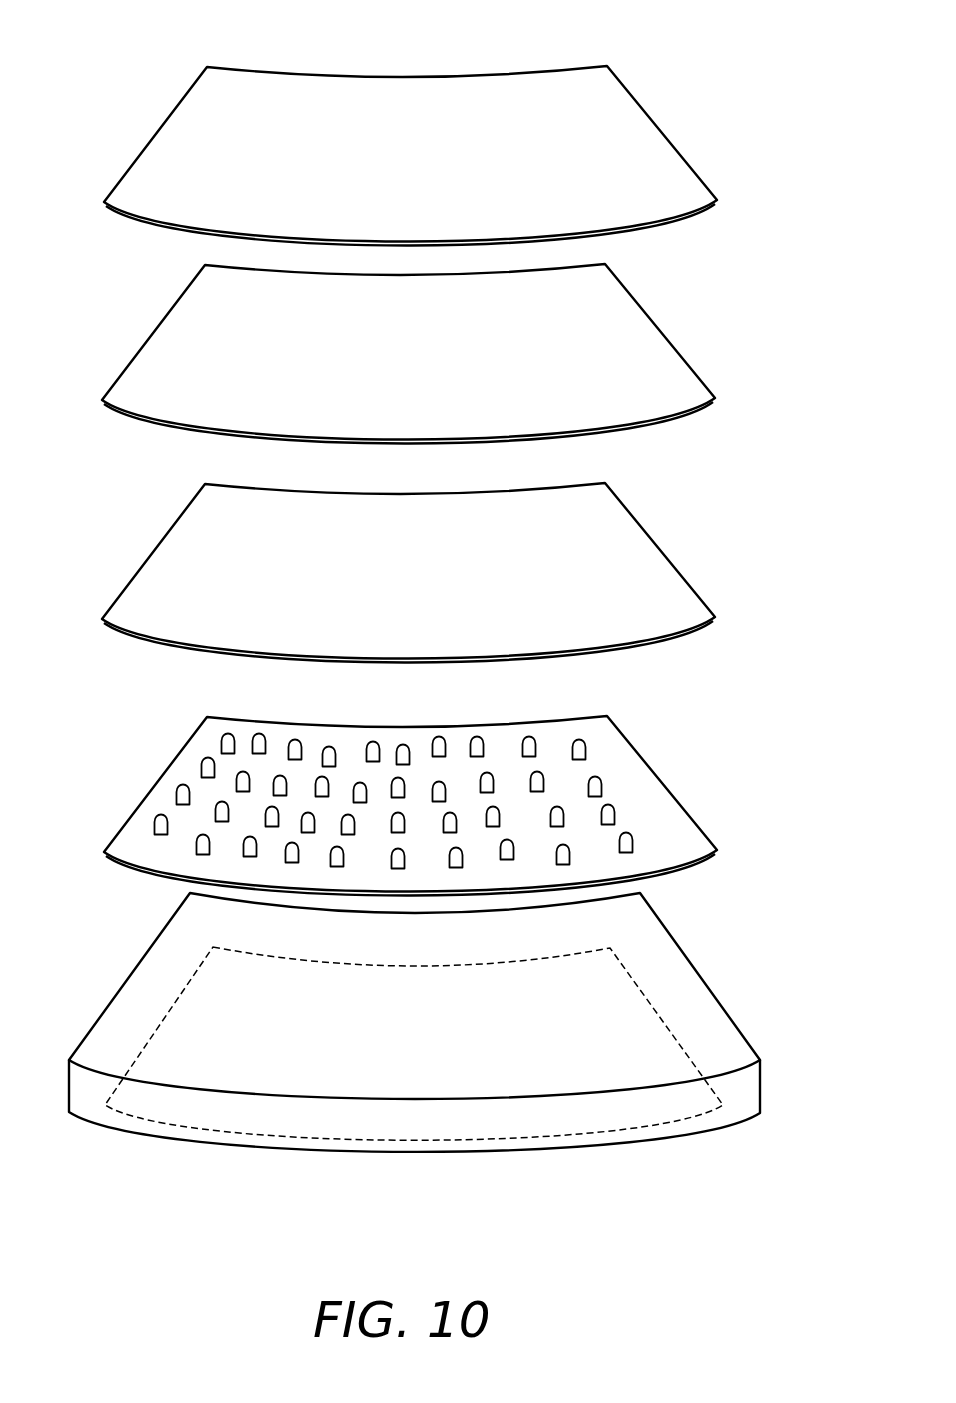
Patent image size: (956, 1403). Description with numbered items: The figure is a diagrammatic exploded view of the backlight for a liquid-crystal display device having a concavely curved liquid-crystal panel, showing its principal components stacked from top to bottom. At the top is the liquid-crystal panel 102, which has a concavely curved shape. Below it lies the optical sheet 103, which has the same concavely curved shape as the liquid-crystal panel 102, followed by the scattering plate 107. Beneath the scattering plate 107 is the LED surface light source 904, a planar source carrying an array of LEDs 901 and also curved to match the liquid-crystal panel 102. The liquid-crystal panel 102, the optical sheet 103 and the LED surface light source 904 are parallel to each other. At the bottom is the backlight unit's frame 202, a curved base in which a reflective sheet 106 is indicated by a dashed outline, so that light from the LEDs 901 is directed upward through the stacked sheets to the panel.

The liquid-crystal panel 102 is at (425, 93).
The optical sheet 103 is at (668, 372).
The scattering plate 107 is at (670, 568).
The LED surface light source 904 is at (672, 802).
The LEDs 901 is at (583, 753).
The backlight unit's frame 202 is at (715, 988).
The reflective sheet 106 is at (693, 1067).